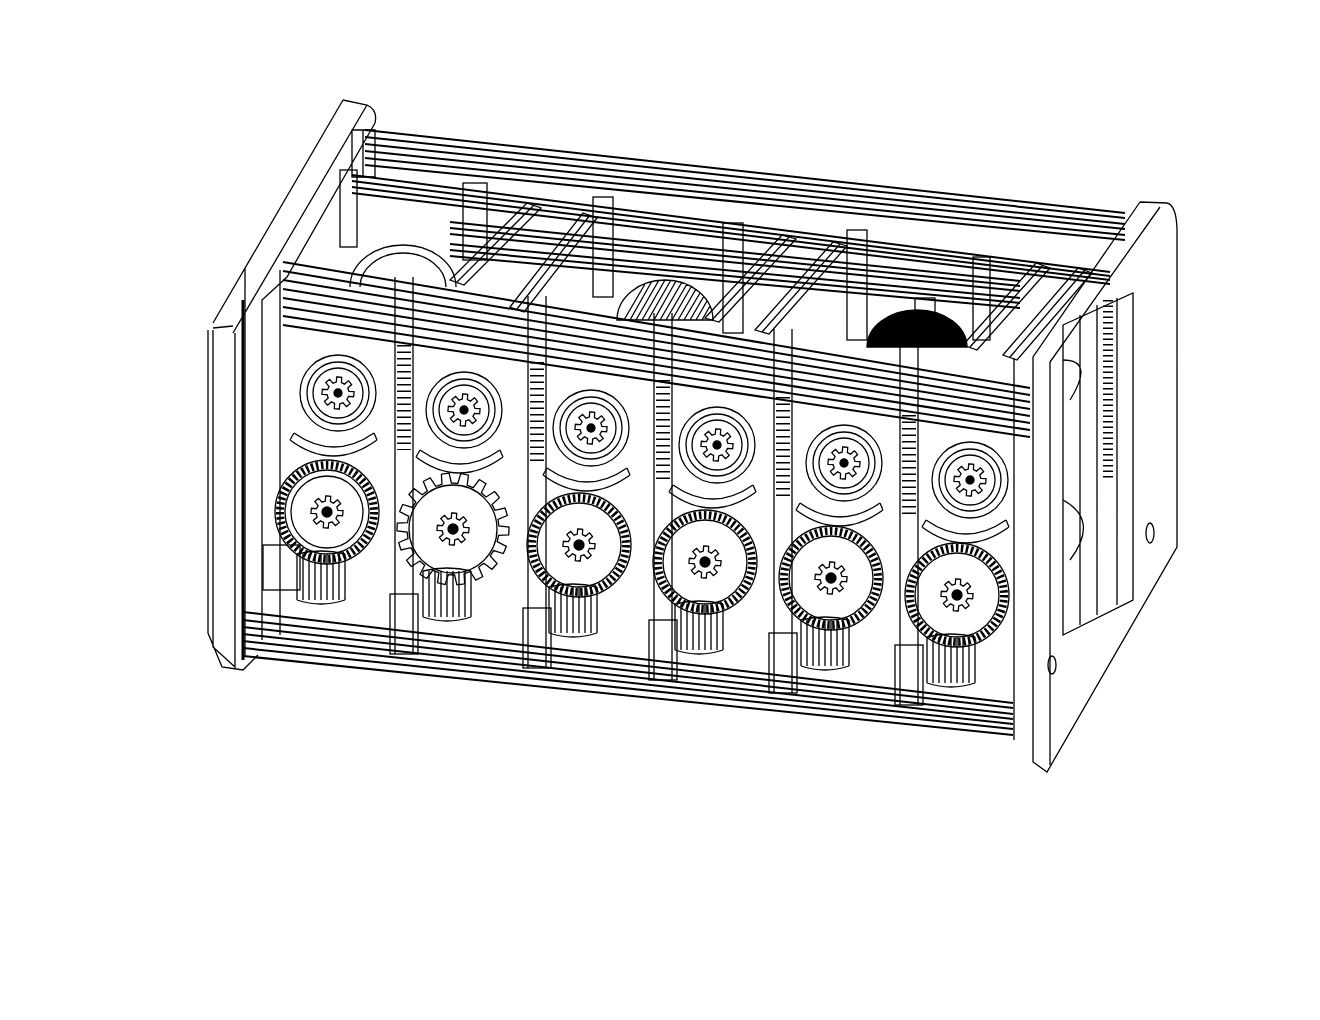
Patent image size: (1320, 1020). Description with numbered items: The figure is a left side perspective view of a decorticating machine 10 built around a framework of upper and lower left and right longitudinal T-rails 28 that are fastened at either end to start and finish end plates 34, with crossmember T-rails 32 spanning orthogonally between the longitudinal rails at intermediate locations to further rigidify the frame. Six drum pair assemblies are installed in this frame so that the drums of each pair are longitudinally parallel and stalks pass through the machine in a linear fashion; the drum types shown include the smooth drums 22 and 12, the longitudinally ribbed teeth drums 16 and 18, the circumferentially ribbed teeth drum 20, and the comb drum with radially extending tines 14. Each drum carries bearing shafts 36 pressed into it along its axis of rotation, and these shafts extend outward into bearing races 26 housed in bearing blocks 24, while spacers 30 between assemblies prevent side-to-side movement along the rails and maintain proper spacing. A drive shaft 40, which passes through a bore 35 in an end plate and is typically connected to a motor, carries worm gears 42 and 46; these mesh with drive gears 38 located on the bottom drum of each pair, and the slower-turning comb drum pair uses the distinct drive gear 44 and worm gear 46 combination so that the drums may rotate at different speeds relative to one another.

The decorticating machine 10 is at (300, 108).
The smooth drum 12 is at (1080, 502).
The comb drum 14 is at (935, 312).
The longitudinally ribbed teeth drum 16 is at (928, 310).
The longitudinally ribbed teeth drum 18 is at (680, 297).
The circumferentially ribbed teeth drum 20 is at (612, 300).
The smooth drum 22 is at (393, 267).
The bearing block 24 is at (297, 348).
The bearing race 26 is at (327, 370).
The longitudinal T-rail 28 is at (402, 190).
The spacer 30 is at (338, 320).
The crossmember T-rail 32 is at (556, 258).
The end plate 34 is at (237, 285).
The bore 35 is at (1060, 667).
The bearing shaft 36 is at (320, 393).
The drive gear 38 is at (358, 530).
The drive shaft 40 is at (667, 620).
The worm gear 42 is at (345, 575).
The drive gear 44 is at (433, 537).
The worm gear 46 is at (503, 560).